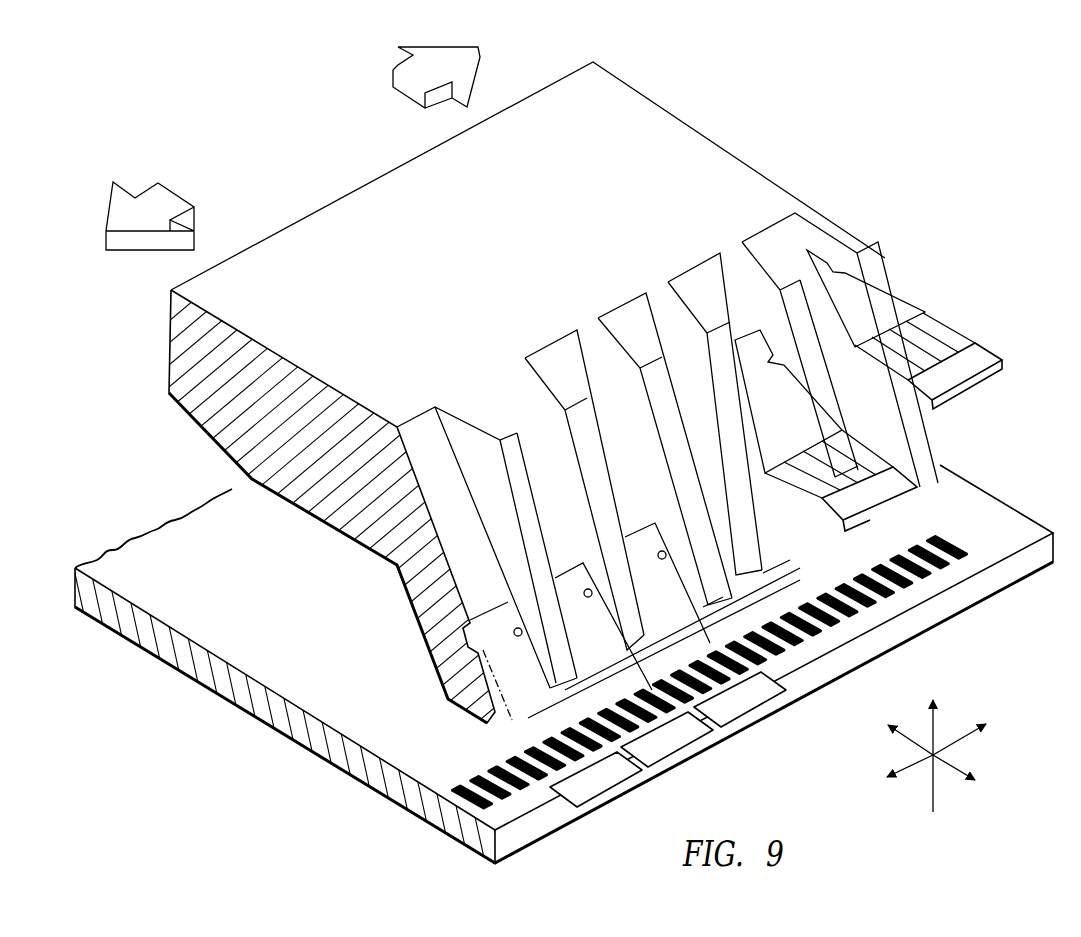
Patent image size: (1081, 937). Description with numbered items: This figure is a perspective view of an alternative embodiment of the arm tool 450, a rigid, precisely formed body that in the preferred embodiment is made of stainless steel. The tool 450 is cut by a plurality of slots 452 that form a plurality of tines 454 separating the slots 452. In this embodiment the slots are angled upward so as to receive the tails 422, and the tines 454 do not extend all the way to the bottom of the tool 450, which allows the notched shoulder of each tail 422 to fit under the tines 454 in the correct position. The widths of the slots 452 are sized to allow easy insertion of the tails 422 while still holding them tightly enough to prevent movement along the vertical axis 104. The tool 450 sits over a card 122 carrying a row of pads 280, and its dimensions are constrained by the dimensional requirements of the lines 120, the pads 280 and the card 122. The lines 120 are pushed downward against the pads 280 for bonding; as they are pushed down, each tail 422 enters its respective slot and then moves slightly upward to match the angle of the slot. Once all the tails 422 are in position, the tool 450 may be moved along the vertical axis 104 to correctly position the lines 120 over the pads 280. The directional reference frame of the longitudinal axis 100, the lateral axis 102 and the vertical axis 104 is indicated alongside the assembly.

The tool 450 is at (481, 229).
The slots 452 is at (748, 222).
The tines 454 is at (782, 397).
The tails 422 is at (870, 300).
The lines 120 is at (952, 333).
The card 122 is at (288, 604).
The pads 280 is at (965, 555).
The longitudinal axis 100 is at (965, 783).
The lateral axis 102 is at (936, 728).
The vertical axis 104 is at (907, 765).